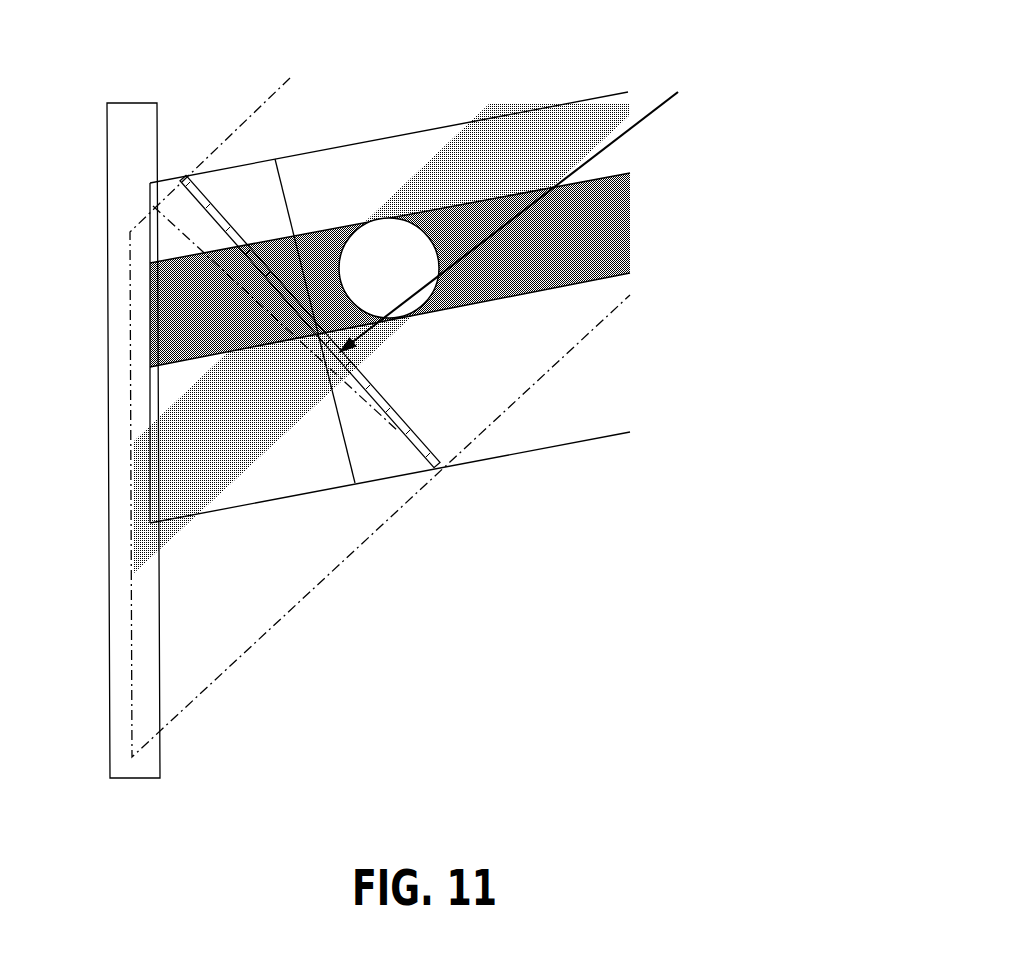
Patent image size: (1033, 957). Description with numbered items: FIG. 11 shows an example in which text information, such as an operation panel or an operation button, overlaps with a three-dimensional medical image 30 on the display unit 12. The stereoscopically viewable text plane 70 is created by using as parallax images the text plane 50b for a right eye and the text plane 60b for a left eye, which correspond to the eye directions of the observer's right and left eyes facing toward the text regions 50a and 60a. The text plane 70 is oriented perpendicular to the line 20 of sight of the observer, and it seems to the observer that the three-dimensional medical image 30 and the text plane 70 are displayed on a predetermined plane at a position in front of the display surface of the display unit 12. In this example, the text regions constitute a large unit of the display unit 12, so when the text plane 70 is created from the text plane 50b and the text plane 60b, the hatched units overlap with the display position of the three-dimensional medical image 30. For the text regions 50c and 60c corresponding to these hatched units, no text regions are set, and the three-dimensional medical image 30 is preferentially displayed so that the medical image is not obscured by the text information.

The display unit 12 is at (157, 127).
The line of sight 20 is at (653, 113).
The three-dimensional medical image 30 is at (430, 240).
The text region 50a is at (132, 738).
The text plane for a right eye 50b is at (390, 432).
The text region 50c is at (138, 443).
The text region 60a is at (149, 183).
The text plane for a left eye 60b is at (345, 443).
The text region 60c is at (138, 266).
The text plane 70 is at (390, 394).